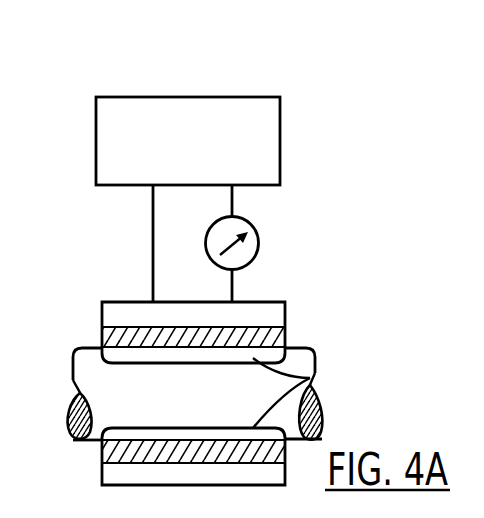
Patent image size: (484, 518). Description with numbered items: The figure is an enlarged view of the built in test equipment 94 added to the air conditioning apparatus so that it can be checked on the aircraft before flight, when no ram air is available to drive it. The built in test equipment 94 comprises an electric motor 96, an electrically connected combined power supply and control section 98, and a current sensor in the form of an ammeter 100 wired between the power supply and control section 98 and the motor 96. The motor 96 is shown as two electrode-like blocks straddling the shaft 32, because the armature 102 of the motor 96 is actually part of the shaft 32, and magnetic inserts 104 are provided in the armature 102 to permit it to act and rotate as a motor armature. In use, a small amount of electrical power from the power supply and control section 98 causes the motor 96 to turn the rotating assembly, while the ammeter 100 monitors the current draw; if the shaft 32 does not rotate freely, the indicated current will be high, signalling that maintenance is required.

The built in test equipment 94 is at (176, 73).
The power supply and control section 98 is at (194, 96).
The ammeter 100 is at (252, 225).
The electric motor 96 is at (257, 300).
The armature 102 is at (215, 409).
The shaft 32 is at (94, 394).
The magnetic inserts 104 is at (316, 379).